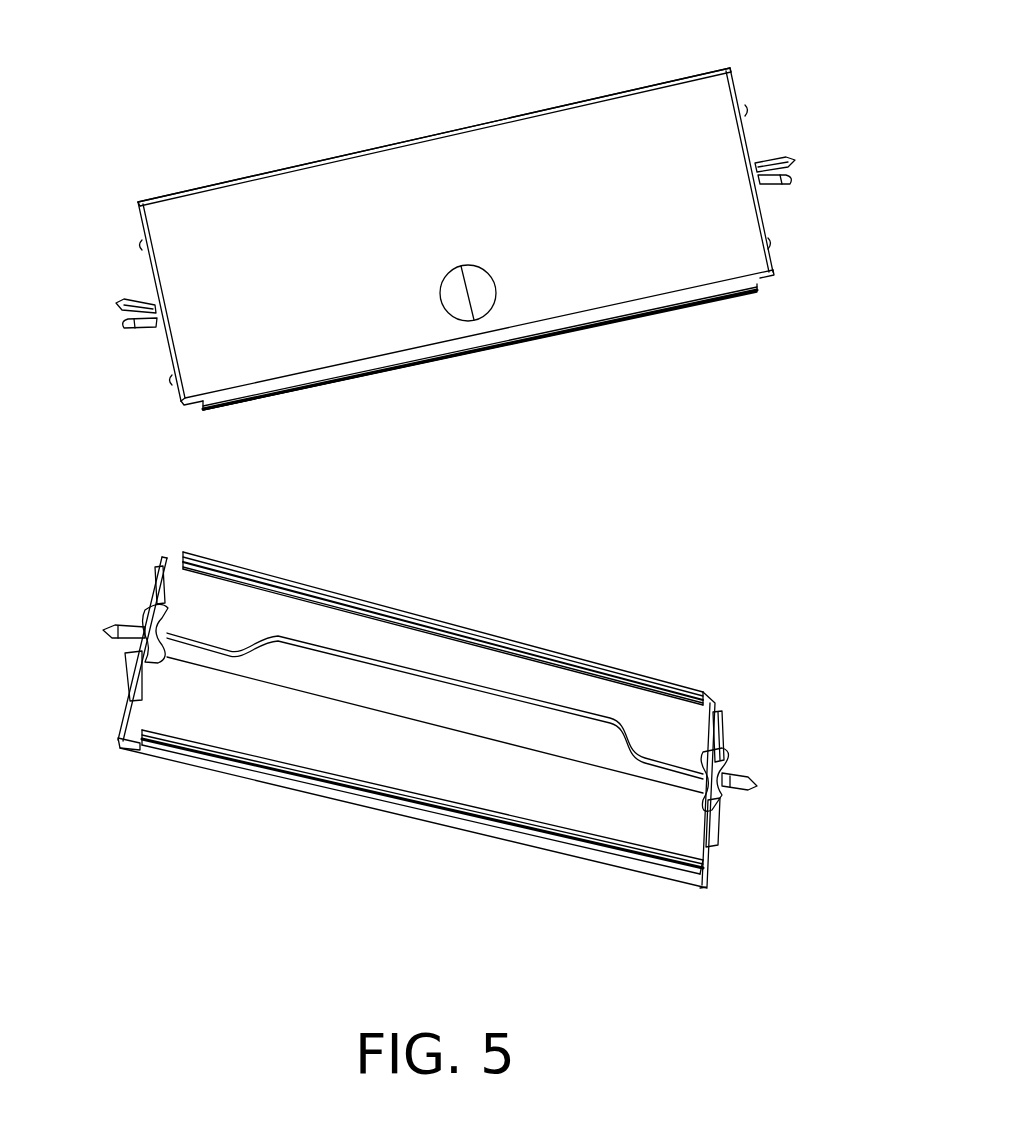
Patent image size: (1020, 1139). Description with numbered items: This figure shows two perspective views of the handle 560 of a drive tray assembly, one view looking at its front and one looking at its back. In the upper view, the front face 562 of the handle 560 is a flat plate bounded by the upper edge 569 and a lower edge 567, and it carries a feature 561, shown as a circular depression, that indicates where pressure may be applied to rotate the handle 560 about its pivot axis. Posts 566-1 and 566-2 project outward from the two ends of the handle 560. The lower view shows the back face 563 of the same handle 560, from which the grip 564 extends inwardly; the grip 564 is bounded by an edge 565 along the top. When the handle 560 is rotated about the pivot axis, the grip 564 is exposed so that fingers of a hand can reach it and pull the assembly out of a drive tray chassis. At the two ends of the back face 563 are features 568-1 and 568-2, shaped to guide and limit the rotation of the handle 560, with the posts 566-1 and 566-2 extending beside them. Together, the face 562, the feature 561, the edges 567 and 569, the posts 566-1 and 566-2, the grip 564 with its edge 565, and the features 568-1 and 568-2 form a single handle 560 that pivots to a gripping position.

The handle 560 is at (157, 161).
The feature 561 is at (488, 305).
The front face 562 is at (621, 203).
The back face 563 is at (460, 686).
The grip 564 is at (527, 713).
The edge of the grip 565 is at (418, 668).
The post 566-1 is at (768, 158).
The post 566-2 is at (152, 322).
The edge 567 is at (618, 308).
The feature 568-1 is at (718, 780).
The feature 568-2 is at (147, 610).
The upper edge 569 is at (480, 123).